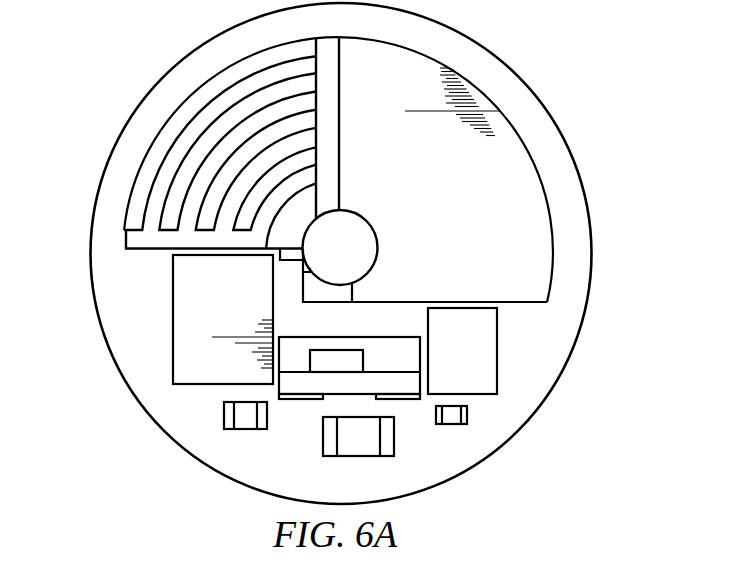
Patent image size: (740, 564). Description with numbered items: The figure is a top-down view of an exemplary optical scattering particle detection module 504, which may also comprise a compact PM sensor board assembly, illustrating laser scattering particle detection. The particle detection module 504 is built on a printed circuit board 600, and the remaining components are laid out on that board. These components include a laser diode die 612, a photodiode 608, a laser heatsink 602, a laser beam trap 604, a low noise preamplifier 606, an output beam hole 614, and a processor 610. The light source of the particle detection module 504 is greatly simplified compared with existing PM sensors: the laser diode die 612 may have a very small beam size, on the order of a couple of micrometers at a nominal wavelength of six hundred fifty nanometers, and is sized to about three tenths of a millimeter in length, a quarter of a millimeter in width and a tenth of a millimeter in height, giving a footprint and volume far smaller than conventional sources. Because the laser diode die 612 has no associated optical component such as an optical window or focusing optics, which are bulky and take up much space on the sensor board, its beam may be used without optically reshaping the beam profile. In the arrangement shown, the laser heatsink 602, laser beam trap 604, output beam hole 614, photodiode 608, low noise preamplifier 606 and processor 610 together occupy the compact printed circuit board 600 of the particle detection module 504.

The particle detection module 504 is at (141, 14).
The printed circuit board 600 is at (503, 80).
The laser heatsink 602 is at (180, 150).
The laser beam trap 604 is at (518, 168).
The low noise preamplifier 606 is at (487, 329).
The photodiode 608 is at (337, 355).
The processor 610 is at (183, 303).
The laser diode die 612 is at (293, 255).
The output beam hole 614 is at (358, 230).